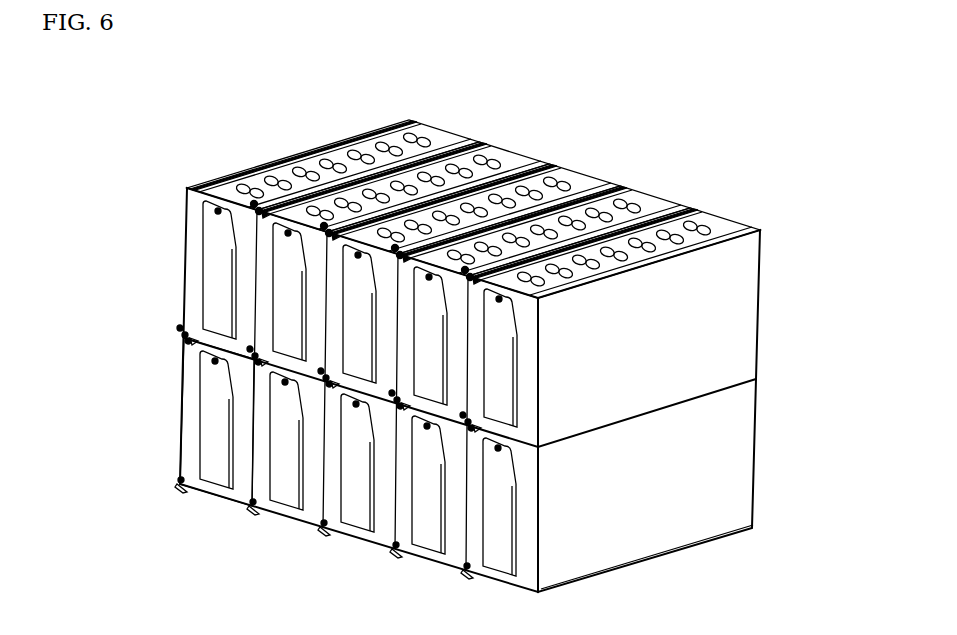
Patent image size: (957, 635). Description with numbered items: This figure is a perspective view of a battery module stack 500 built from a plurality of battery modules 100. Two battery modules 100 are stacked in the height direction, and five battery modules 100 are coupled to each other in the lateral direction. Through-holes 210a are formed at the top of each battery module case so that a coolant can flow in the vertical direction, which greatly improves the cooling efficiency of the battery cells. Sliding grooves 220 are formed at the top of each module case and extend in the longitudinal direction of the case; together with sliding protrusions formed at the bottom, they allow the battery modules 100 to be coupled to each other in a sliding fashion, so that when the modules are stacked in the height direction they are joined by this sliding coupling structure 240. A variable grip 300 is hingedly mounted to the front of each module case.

The battery module stack 500 is at (91, 116).
The sliding grooves 220 is at (563, 160).
The through-holes 210a is at (643, 197).
The variable grip 300 is at (203, 263).
The sliding coupling structure 240 is at (182, 346).
The battery module 100 is at (178, 432).